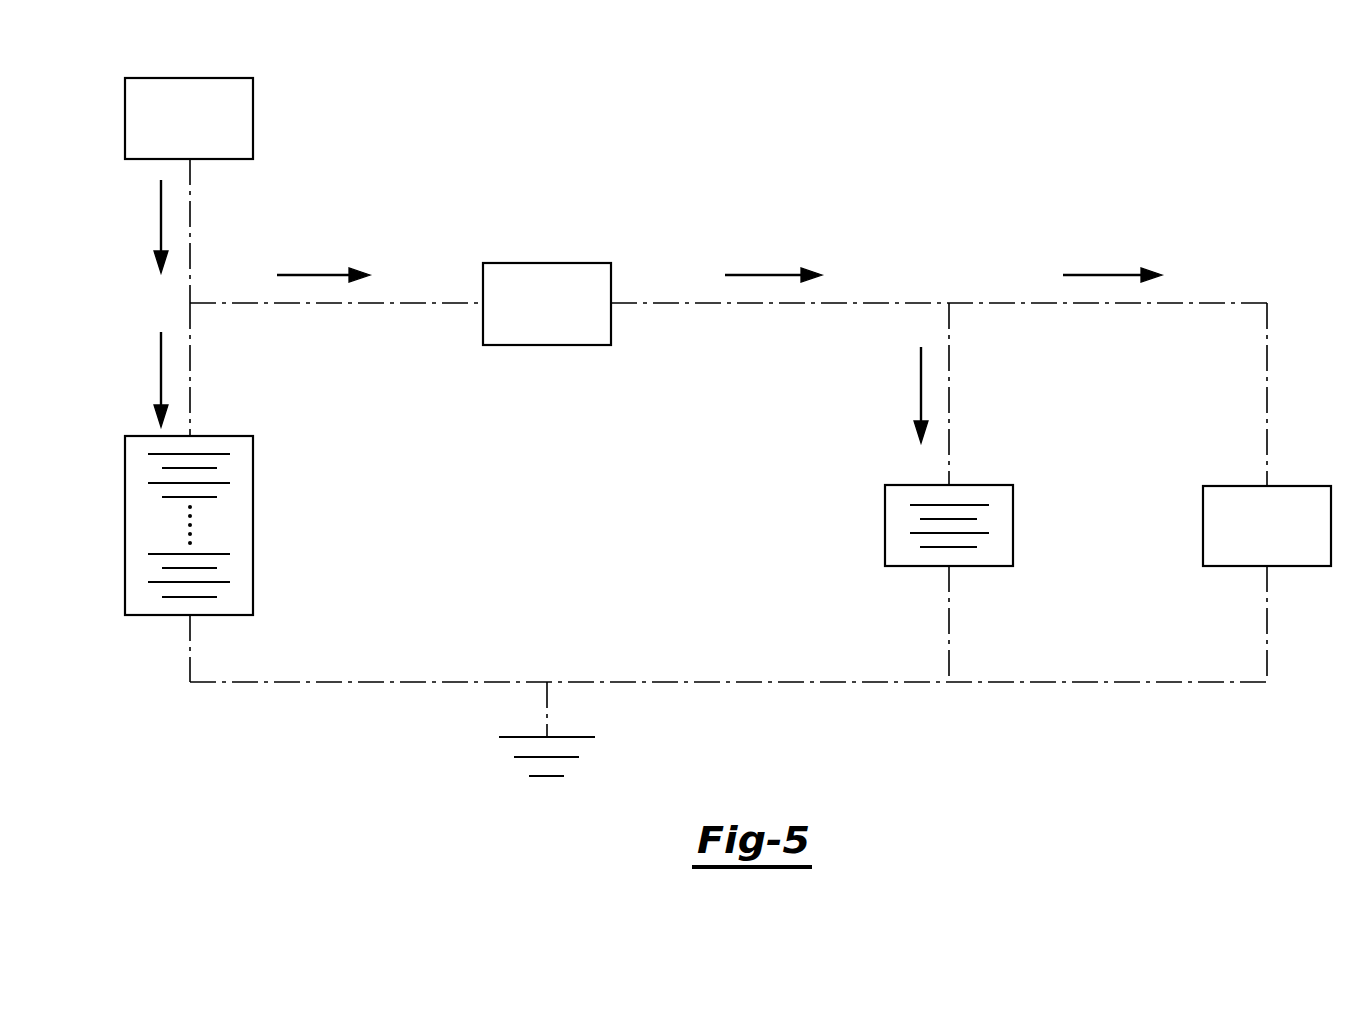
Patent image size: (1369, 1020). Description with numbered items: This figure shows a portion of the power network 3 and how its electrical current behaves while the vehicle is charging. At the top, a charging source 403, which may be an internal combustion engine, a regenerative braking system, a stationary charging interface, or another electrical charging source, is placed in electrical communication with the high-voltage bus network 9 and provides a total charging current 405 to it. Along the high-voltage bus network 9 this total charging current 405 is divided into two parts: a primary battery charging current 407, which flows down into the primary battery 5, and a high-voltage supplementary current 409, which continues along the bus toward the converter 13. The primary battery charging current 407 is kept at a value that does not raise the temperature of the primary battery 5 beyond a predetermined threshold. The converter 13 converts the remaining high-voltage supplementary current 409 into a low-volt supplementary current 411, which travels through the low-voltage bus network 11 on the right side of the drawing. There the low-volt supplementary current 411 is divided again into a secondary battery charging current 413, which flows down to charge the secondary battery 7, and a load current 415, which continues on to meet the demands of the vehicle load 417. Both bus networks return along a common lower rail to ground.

The power network 3 is at (617, 168).
The primary battery 5 is at (253, 520).
The secondary battery 7 is at (885, 526).
The high-voltage bus network 9 is at (190, 363).
The low-voltage bus network 11 is at (949, 397).
The converter 13 is at (547, 263).
The charging source 403 is at (254, 119).
The total charging current 405 is at (161, 227).
The primary battery charging current 407 is at (161, 380).
The high-voltage supplementary current 409 is at (325, 275).
The low-volt supplementary current 411 is at (773, 275).
The secondary battery charging current 413 is at (921, 397).
The load current 415 is at (1113, 275).
The vehicle load 417 is at (1203, 527).